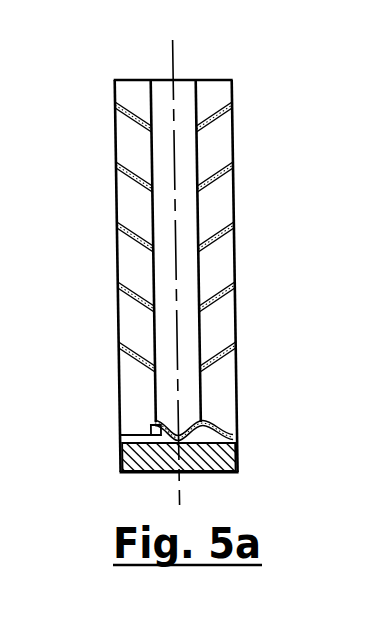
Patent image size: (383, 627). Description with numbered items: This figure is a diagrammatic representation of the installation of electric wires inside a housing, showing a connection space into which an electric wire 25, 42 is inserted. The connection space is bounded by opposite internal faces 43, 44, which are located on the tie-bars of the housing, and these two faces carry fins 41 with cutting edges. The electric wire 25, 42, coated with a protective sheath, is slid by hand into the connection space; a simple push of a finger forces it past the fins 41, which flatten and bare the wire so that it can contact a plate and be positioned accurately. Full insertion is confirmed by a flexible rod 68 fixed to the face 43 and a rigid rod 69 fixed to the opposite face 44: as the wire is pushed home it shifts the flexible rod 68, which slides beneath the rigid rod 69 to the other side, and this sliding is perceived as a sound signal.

The electric wire 25 is at (147, 252).
The electric wire 42 is at (165, 88).
The fins 41 is at (137, 122).
The internal face 43 is at (232, 132).
The internal face 44 is at (116, 196).
The flexible rod 68 is at (217, 430).
The rigid rod 69 is at (132, 434).